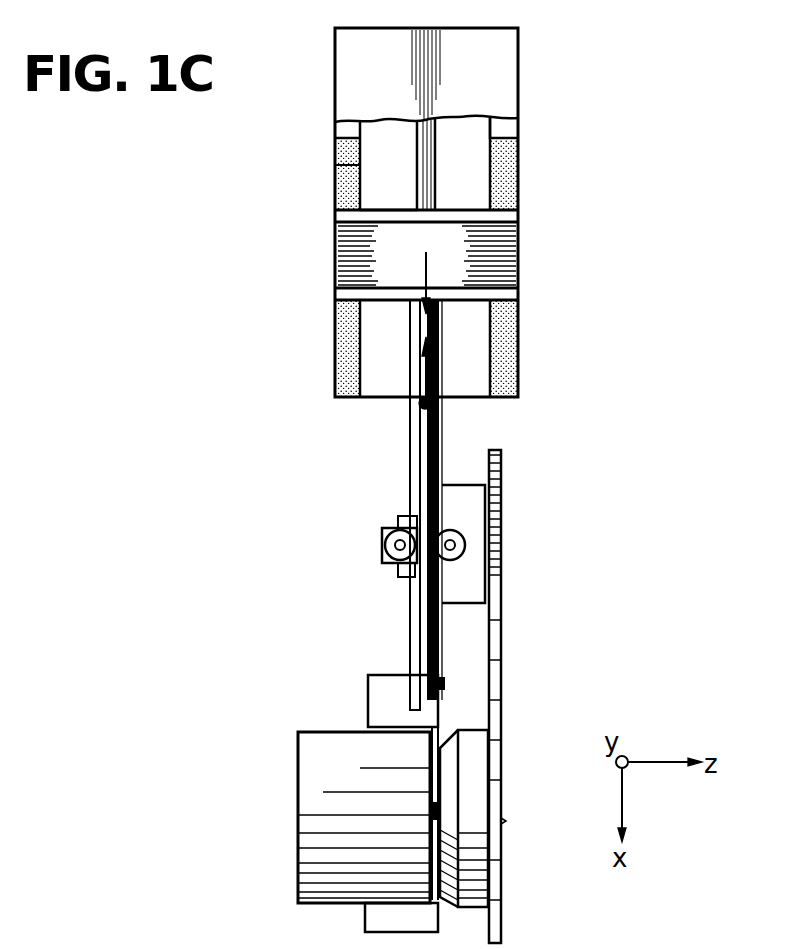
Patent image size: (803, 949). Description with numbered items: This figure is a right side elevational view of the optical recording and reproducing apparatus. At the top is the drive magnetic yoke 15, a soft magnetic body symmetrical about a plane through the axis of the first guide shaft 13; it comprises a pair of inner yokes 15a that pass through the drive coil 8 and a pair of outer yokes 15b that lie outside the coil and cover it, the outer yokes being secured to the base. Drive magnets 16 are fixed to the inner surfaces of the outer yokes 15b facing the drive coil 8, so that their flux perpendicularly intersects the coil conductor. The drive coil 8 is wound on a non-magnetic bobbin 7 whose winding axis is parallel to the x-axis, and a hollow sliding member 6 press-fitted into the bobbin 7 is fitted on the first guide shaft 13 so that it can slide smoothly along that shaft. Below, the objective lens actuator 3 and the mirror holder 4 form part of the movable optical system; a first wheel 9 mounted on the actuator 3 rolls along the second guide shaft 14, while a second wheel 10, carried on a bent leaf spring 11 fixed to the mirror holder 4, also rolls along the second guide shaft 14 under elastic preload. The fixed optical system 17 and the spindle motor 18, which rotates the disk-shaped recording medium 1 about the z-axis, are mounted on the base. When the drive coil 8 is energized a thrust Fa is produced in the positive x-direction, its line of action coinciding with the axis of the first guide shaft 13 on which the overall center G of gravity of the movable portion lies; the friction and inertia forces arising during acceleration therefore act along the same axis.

The recording medium 1 is at (502, 482).
The objective lens actuator 3 is at (463, 604).
The mirror holder 4 is at (405, 517).
The sliding member 6 is at (441, 481).
The bobbin 7 is at (397, 211).
The drive coil 8 is at (518, 262).
The first wheel 9 is at (465, 545).
The second wheel 10 is at (383, 540).
The leaf spring 11 is at (396, 565).
The first guide shaft 13 is at (462, 164).
The second guide shaft 14 is at (415, 633).
The drive magnetic yoke 15 is at (505, 70).
The inner yokes 15a is at (335, 165).
The outer yokes 15b is at (335, 200).
The drive magnets 16 is at (510, 135).
The fixed optical system 17 is at (368, 692).
The spindle motor 18 is at (298, 828).
The center of gravity G is at (419, 404).
The thrust Fa is at (422, 270).